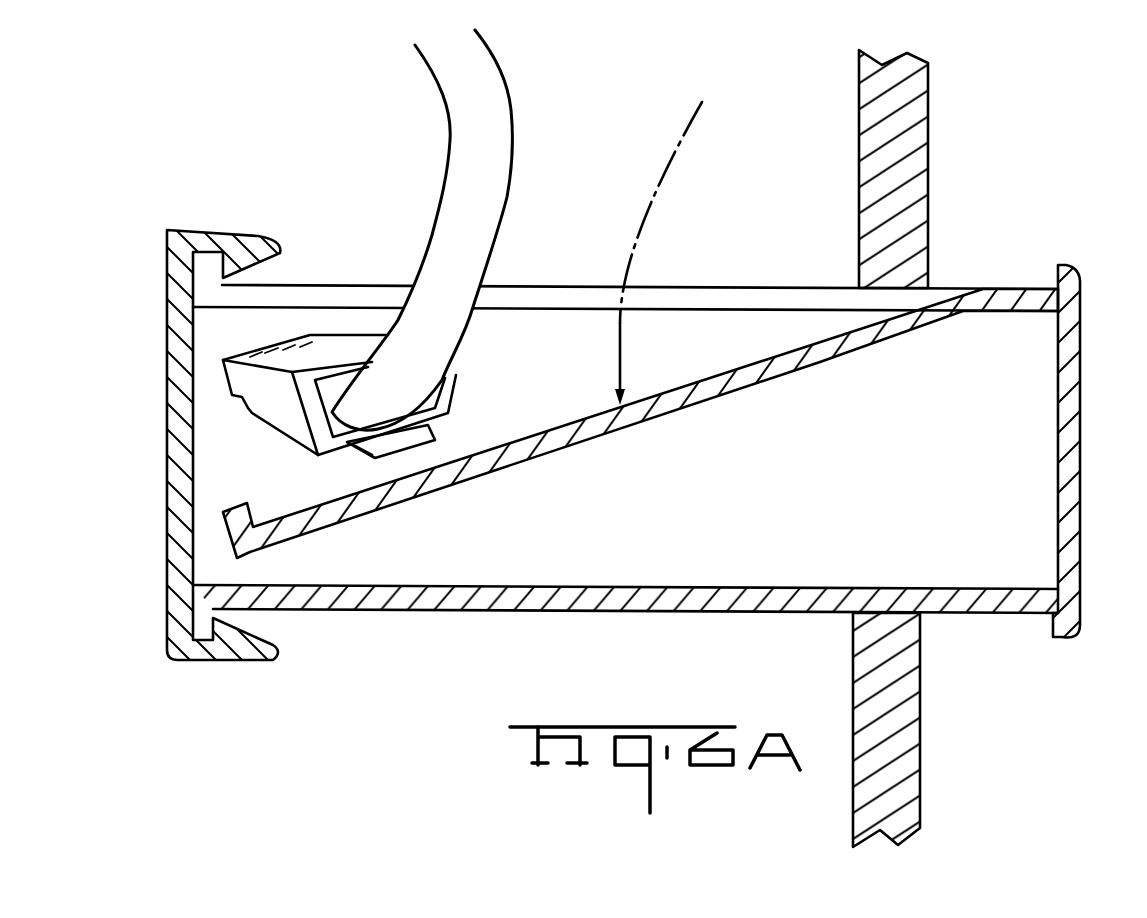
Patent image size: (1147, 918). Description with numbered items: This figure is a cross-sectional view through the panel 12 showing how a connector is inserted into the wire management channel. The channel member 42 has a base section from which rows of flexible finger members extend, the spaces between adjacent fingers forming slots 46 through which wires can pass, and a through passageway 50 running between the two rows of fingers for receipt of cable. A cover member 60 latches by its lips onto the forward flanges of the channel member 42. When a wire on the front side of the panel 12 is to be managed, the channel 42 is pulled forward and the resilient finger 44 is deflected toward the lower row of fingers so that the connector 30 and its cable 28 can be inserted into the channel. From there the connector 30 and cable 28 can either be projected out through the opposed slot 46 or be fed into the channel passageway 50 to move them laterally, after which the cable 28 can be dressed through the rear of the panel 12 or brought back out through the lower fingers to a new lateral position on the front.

The panel 12 is at (930, 190).
The cable 28 is at (455, 220).
The connector 30 is at (278, 400).
The channel member 42 is at (1000, 262).
The flexible finger member 44 is at (705, 398).
The slot 46 is at (715, 297).
The through passageway 50 is at (1060, 438).
The cover member 60 is at (168, 373).